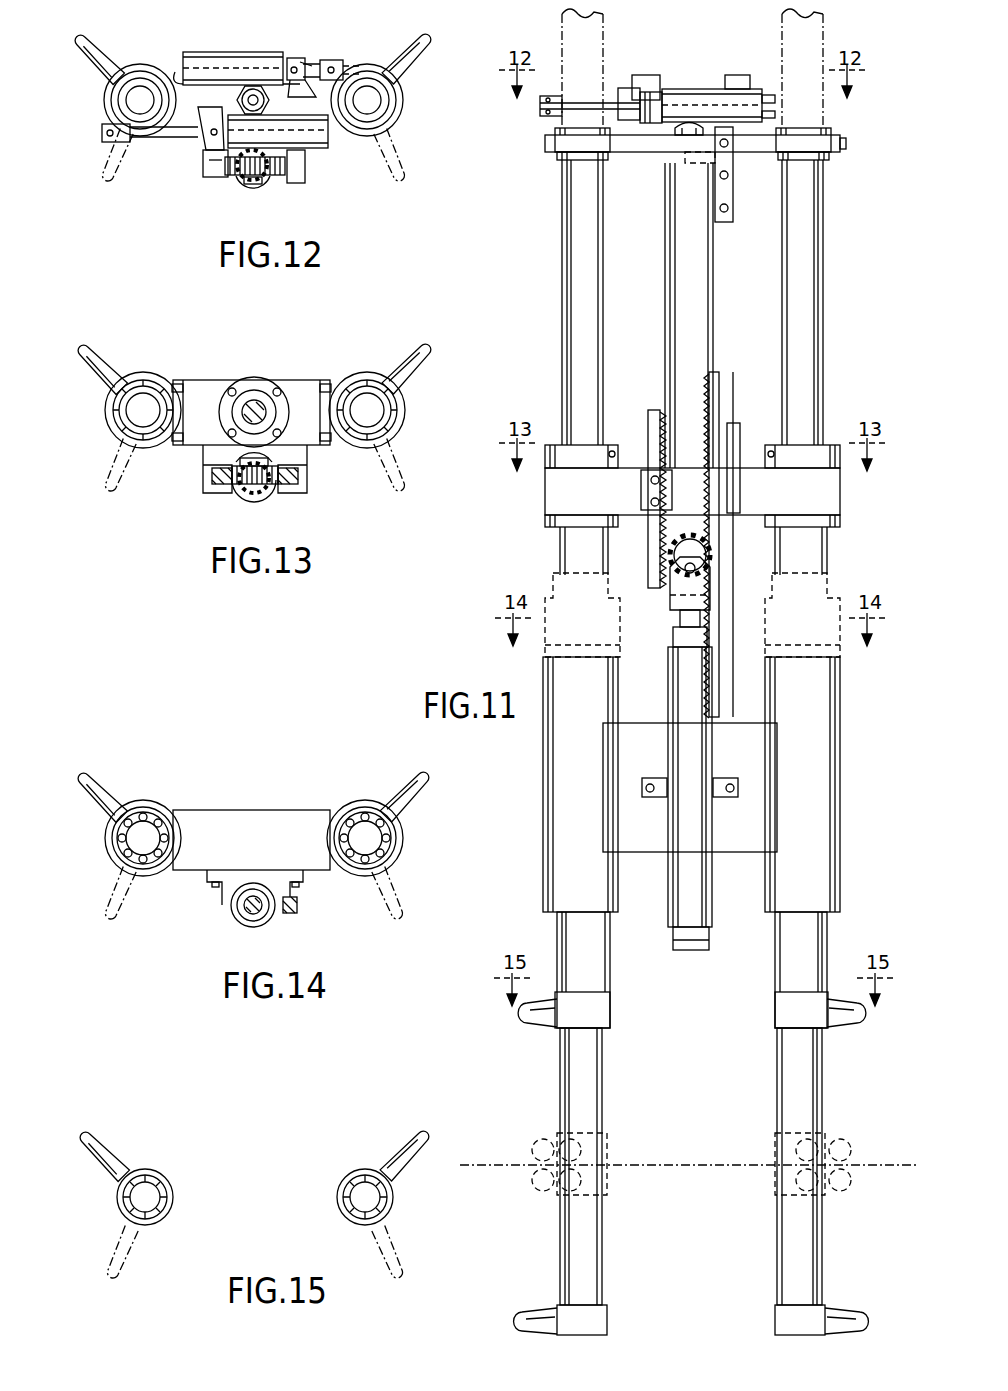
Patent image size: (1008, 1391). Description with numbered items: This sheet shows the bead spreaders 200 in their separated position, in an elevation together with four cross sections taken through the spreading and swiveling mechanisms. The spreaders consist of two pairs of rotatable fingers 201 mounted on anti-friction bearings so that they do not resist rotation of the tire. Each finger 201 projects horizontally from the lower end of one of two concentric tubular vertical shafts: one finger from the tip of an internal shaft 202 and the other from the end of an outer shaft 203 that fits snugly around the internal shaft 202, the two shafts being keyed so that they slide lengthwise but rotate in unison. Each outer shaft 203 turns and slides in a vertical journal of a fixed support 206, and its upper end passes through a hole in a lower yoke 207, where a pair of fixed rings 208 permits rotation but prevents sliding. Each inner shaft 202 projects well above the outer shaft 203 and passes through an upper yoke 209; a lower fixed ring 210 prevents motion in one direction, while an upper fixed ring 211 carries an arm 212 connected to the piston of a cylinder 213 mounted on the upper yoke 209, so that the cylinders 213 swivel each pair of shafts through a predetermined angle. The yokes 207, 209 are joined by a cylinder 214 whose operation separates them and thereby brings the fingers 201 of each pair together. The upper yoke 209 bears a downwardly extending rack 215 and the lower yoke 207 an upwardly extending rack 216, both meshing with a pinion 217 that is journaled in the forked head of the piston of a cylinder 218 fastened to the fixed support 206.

In FIG. 11, the bead spreaders 200 is at (548, 1065).
In FIG. 12, the rotatable fingers 201 is at (92, 60).
In FIG. 13, the rotatable fingers 201 is at (92, 362).
In FIG. 14, the rotatable fingers 201 is at (96, 792).
In FIG. 15, the rotatable fingers 201 is at (105, 1142).
In FIG. 11, the rotatable fingers 201 is at (518, 1015).
In FIG. 12, the internal shaft 202 is at (140, 82).
In FIG. 13, the internal shaft 202 is at (124, 425).
In FIG. 14, the internal shaft 202 is at (120, 860).
In FIG. 15, the internal shaft 202 is at (338, 1205).
In FIG. 11, the internal shaft 202 is at (578, 286).
In FIG. 13, the outer shaft 203 is at (120, 408).
In FIG. 14, the outer shaft 203 is at (118, 838).
In FIG. 15, the outer shaft 203 is at (338, 1186).
In FIG. 11, the outer shaft 203 is at (566, 540).
In FIG. 14, the fixed support 206 is at (274, 820).
In FIG. 11, the fixed support 206 is at (815, 778).
In FIG. 13, the lower yoke 207 is at (298, 396).
In FIG. 11, the lower yoke 207 is at (820, 500).
In FIG. 13, the fixed rings 208 is at (146, 378).
In FIG. 11, the fixed rings 208 is at (548, 520).
In FIG. 12, the upper yoke 209 is at (178, 84).
In FIG. 11, the upper yoke 209 is at (846, 143).
In FIG. 11, the lower fixed ring 210 is at (558, 158).
In FIG. 12, the upper fixed ring 211 is at (122, 90).
In FIG. 11, the upper fixed ring 211 is at (585, 135).
In FIG. 12, the arm 212 is at (102, 128).
In FIG. 11, the arm 212 is at (540, 112).
In FIG. 12, the cylinder 213 is at (233, 55).
In FIG. 11, the cylinder 213 is at (698, 90).
In FIG. 12, the cylinder 214 is at (213, 166).
In FIG. 13, the cylinder 214 is at (254, 388).
In FIG. 11, the cylinder 214 is at (685, 297).
In FIG. 12, the rack 215 is at (298, 170).
In FIG. 13, the rack 215 is at (300, 478).
In FIG. 11, the rack 215 is at (724, 398).
In FIG. 13, the rack 216 is at (208, 478).
In FIG. 11, the rack 216 is at (657, 533).
In FIG. 12, the pinion 217 is at (248, 180).
In FIG. 13, the pinion 217 is at (241, 488).
In FIG. 11, the pinion 217 is at (700, 548).
In FIG. 12, the cylinder 218 is at (268, 185).
In FIG. 13, the cylinder 218 is at (265, 496).
In FIG. 14, the cylinder 218 is at (245, 923).
In FIG. 11, the cylinder 218 is at (700, 765).